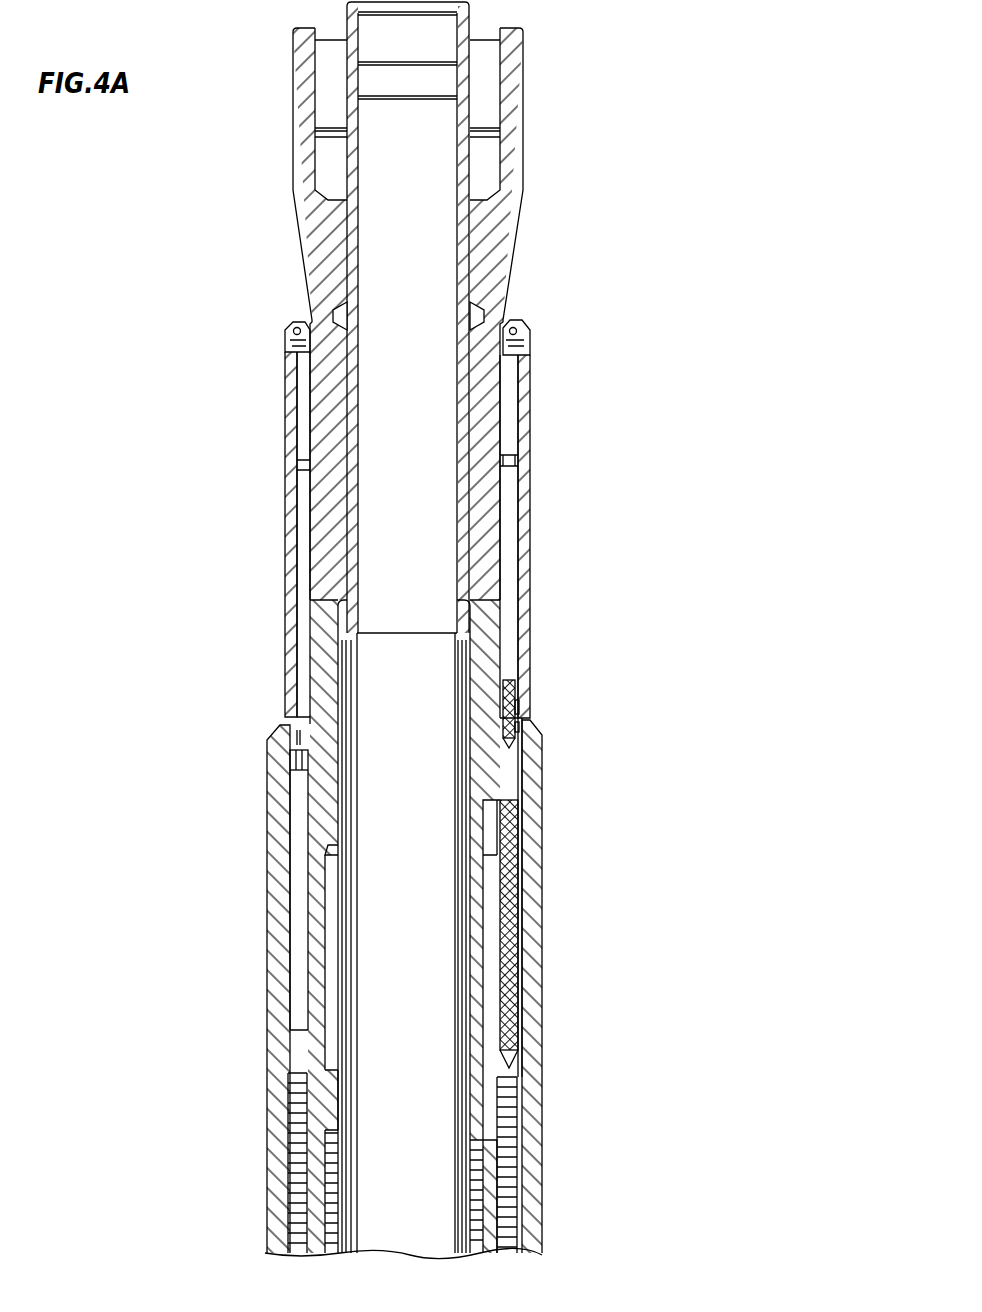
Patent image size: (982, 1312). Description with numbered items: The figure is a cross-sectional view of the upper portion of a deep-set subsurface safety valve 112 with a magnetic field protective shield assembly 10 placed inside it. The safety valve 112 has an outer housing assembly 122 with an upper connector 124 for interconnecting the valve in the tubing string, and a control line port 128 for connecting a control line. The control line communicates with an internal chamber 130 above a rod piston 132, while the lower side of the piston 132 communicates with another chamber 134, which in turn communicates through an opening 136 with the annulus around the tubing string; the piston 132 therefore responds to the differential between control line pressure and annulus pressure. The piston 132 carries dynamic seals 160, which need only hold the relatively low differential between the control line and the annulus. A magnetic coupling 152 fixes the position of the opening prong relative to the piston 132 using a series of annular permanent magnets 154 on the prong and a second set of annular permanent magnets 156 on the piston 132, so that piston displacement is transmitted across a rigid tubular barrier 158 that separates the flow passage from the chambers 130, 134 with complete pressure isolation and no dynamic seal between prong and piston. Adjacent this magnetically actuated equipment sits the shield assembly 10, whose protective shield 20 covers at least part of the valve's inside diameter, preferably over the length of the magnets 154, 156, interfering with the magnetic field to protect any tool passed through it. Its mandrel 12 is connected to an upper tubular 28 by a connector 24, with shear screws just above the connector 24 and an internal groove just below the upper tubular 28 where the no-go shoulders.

The subsurface safety valve 112 is at (596, 268).
The upper connector 124 is at (512, 169).
The upper tubular 28 is at (457, 318).
The opening 136 is at (298, 342).
The control line port 128 is at (525, 328).
The outer housing assembly 122 is at (523, 414).
The internal chamber 130 is at (512, 532).
The connector 24 is at (455, 638).
The shield assembly 10 is at (453, 725).
The mandrel 12 is at (453, 768).
The rod piston 132 is at (518, 686).
The dynamic seals 160 is at (518, 700).
The chamber 134 is at (522, 792).
The protective shield 20 is at (453, 862).
The rigid tubular barrier 158 is at (490, 925).
The magnetic coupling 152 is at (598, 1128).
The annular permanent magnets 154 is at (507, 1157).
The annular permanent magnets 156 is at (480, 1190).